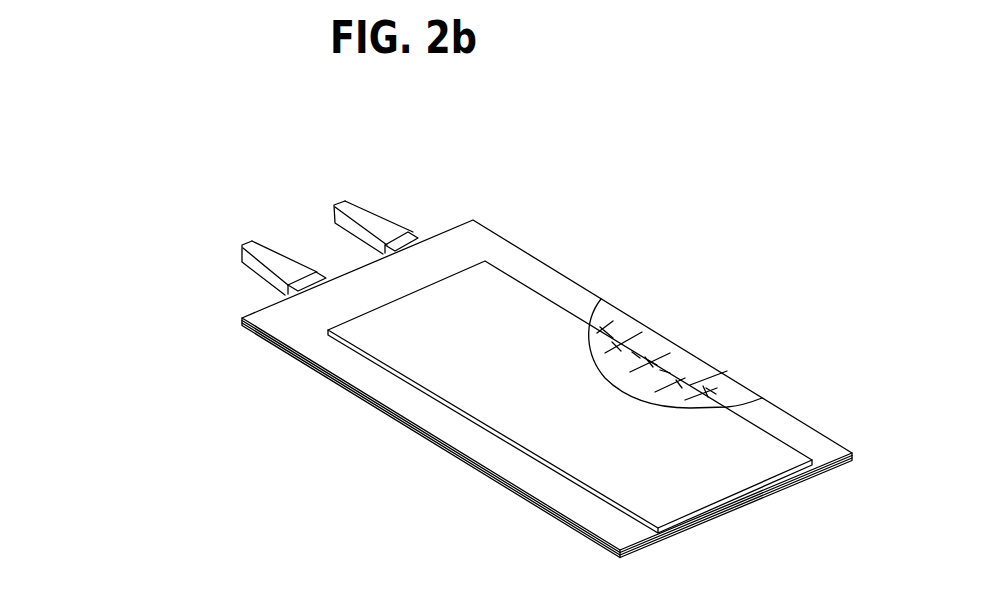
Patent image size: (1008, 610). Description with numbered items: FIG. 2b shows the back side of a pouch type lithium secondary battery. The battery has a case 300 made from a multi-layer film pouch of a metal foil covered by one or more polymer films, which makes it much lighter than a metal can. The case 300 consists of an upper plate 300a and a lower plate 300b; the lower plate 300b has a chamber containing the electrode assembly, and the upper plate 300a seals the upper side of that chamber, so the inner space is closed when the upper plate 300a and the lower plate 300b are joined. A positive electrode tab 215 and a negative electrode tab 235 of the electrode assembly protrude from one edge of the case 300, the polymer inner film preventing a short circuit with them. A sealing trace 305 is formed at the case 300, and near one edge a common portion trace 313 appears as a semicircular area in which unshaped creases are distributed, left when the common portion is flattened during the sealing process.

The positive electrode tab 215 is at (345, 201).
The negative electrode tab 235 is at (252, 242).
The case 300 is at (440, 389).
The upper plate 300a is at (242, 318).
The lower plate 300b is at (245, 327).
The sealing trace 305 is at (653, 333).
The common portion trace 313 is at (730, 378).